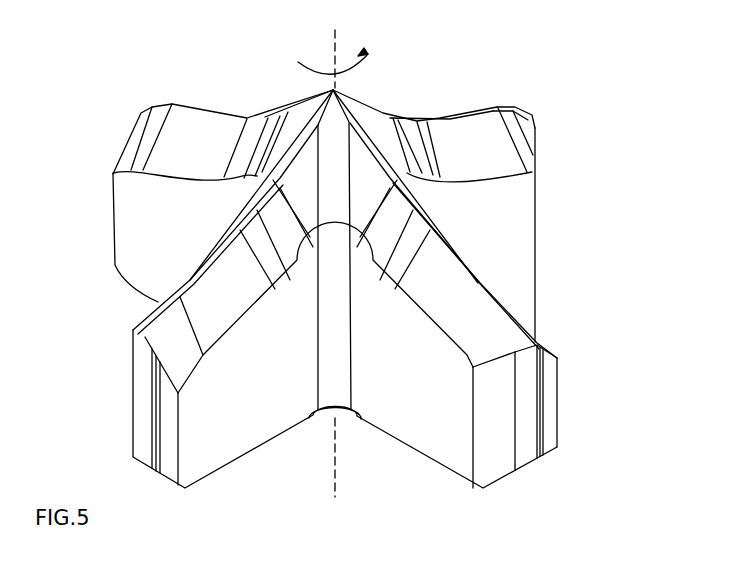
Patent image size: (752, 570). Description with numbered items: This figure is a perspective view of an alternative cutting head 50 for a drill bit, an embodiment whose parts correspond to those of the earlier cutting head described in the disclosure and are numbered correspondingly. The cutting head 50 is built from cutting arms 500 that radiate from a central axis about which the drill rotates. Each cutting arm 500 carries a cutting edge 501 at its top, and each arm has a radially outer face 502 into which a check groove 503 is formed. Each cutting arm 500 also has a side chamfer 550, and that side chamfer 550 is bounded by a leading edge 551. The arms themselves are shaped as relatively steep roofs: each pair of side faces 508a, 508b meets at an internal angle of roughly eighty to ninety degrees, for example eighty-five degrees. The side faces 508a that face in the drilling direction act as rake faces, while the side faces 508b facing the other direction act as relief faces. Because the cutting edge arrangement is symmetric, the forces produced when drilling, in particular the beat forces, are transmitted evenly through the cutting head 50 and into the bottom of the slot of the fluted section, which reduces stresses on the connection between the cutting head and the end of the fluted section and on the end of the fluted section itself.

The cutting head 50 is at (174, 80).
The cutting arms 500 is at (115, 233).
The cutting edge 501 is at (492, 105).
The radially outer face 502 is at (525, 437).
The check groove 503 is at (537, 460).
The side face 508a is at (185, 150).
The side face 508b is at (483, 147).
The side chamfer 550 is at (492, 443).
The leading edge 551 is at (515, 380).